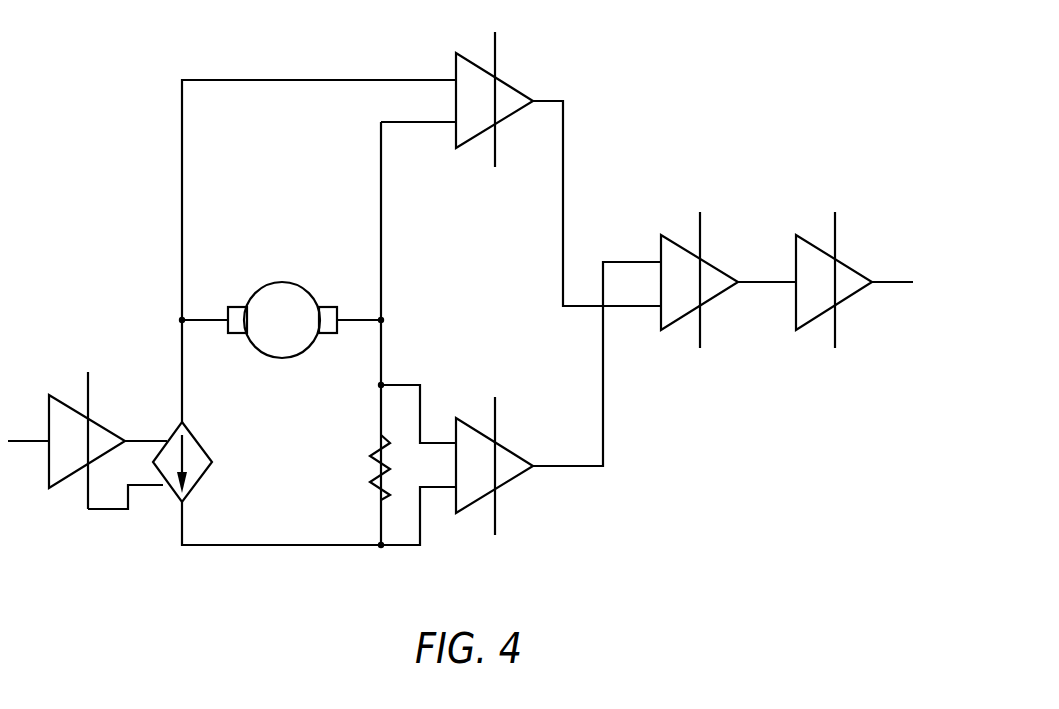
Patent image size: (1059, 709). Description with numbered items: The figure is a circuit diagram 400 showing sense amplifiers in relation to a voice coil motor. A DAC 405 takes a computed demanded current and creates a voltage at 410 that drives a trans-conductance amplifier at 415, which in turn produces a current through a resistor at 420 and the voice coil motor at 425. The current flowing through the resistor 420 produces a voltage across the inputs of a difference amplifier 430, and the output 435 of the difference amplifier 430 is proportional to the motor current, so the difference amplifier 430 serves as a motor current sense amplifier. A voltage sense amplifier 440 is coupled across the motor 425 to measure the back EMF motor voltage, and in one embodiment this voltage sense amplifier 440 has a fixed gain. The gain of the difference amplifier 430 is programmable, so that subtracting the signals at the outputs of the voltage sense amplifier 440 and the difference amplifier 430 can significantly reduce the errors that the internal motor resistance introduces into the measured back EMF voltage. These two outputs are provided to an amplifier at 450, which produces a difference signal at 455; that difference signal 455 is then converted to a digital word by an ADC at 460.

The circuit diagram 400 is at (790, 43).
The DAC 405 is at (97, 424).
The voltage 410 is at (147, 441).
The trans-conductance amplifier 415 is at (194, 438).
The resistor 420 is at (380, 441).
The voice coil motor 425 is at (318, 288).
The difference amplifier 430 is at (508, 446).
The output 435 is at (569, 470).
The voltage sense amplifier 440 is at (505, 80).
The amplifier 450 is at (713, 264).
The difference signal 455 is at (767, 287).
The ADC 460 is at (848, 264).